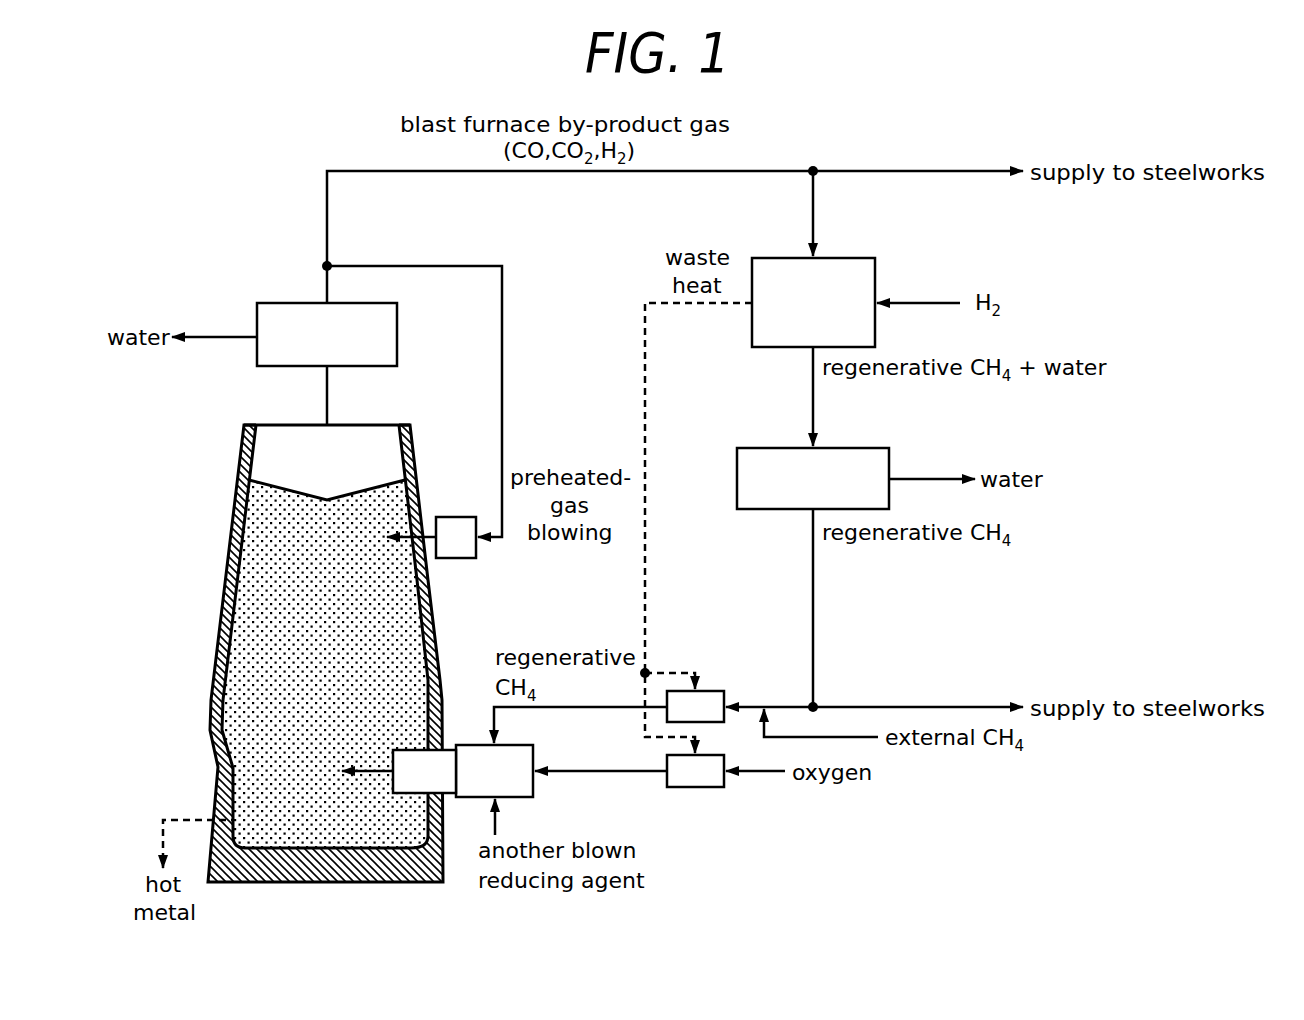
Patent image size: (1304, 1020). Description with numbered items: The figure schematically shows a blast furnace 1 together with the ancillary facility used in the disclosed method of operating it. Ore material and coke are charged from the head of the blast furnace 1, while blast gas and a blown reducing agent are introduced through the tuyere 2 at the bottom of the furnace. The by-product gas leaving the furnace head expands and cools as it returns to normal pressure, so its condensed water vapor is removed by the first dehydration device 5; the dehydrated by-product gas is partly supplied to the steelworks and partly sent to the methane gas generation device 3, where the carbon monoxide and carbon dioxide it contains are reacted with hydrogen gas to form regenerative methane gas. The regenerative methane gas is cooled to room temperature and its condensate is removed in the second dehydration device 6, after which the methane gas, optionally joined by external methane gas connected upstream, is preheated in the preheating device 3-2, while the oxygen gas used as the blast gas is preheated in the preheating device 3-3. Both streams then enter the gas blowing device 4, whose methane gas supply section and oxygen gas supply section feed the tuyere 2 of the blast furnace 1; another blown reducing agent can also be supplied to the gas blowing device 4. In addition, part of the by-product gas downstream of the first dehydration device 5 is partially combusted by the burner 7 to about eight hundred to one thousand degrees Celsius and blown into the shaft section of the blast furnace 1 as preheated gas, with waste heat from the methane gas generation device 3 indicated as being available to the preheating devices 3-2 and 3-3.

The blast furnace 1 is at (432, 621).
The tuyere 2 is at (447, 750).
The methane gas generation device 3 is at (875, 268).
The preheating device 3-2 is at (707, 691).
The preheating device 3-3 is at (702, 787).
The gas blowing device 4 is at (518, 797).
The first dehydration device 5 is at (397, 338).
The second dehydration device 6 is at (889, 462).
The burner 7 is at (455, 517).